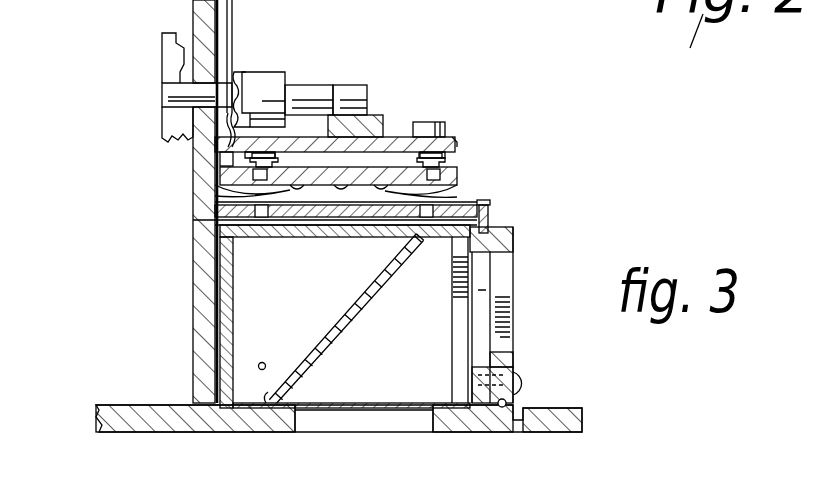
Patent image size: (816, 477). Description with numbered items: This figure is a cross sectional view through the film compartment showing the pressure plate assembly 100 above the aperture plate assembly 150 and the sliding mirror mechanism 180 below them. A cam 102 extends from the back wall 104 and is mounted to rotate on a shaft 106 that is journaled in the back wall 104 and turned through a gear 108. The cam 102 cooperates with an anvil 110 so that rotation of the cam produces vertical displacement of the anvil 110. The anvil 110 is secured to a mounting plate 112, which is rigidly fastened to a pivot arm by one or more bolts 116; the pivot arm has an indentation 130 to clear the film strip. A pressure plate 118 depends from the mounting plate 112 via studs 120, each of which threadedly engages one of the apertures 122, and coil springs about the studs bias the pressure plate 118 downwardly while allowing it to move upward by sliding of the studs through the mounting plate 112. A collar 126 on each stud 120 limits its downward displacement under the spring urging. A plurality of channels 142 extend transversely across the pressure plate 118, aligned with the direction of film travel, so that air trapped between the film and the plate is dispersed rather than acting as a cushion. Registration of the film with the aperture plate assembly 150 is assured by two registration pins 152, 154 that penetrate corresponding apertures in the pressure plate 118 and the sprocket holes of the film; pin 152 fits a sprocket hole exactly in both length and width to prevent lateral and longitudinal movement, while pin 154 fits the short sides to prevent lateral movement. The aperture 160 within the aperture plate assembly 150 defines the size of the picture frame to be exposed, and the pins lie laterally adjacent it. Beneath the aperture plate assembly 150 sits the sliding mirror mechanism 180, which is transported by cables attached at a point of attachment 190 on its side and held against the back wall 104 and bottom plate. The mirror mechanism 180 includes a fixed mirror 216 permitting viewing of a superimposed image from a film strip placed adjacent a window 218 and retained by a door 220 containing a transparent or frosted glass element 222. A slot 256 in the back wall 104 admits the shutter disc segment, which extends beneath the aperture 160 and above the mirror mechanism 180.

The pressure plate assembly 100 is at (462, 130).
The cam 102 is at (345, 85).
The back wall 104 is at (203, 30).
The shaft 106 is at (190, 80).
The gear 108 is at (160, 125).
The anvil 110 is at (387, 137).
The mounting plate 112 is at (428, 122).
The bolt 116 is at (232, 153).
The pressure plate 118 is at (457, 172).
The stud 120 is at (460, 157).
The aperture 122 is at (447, 193).
The collar 126 is at (447, 128).
The indentation 130 is at (243, 72).
The channel 142 is at (457, 197).
The aperture plate assembly 150 is at (493, 212).
The registration pin 152 is at (272, 237).
The registration pin 154 is at (398, 235).
The aperture 160 is at (368, 267).
The sliding mirror mechanism 180 is at (475, 283).
The point of attachment 190 is at (258, 363).
The fixed mirror 216 is at (338, 337).
The window 218 is at (512, 252).
The door 220 is at (512, 358).
The glass element 222 is at (505, 327).
The slot 256 is at (193, 221).